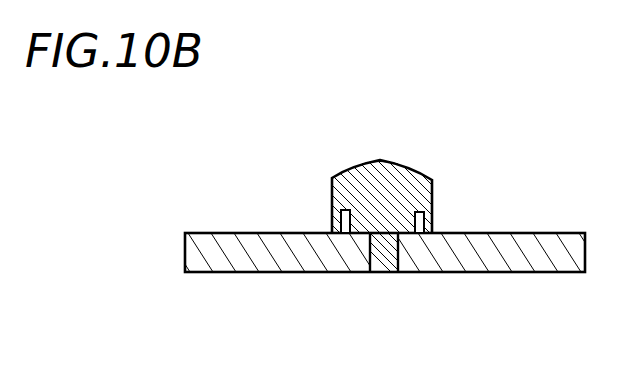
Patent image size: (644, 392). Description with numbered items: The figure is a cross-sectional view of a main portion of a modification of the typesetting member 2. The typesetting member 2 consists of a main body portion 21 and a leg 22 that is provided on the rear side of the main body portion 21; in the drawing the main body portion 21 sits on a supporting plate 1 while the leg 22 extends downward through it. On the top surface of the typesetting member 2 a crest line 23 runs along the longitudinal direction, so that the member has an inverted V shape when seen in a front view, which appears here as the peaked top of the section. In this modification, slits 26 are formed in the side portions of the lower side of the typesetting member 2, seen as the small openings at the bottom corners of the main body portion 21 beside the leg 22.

The substrate 1 is at (228, 263).
The typesetting member 2 is at (435, 168).
The main body portion 21 is at (435, 200).
The leg 22 is at (376, 273).
The crest line 23 is at (383, 157).
The slits 26 is at (348, 209).